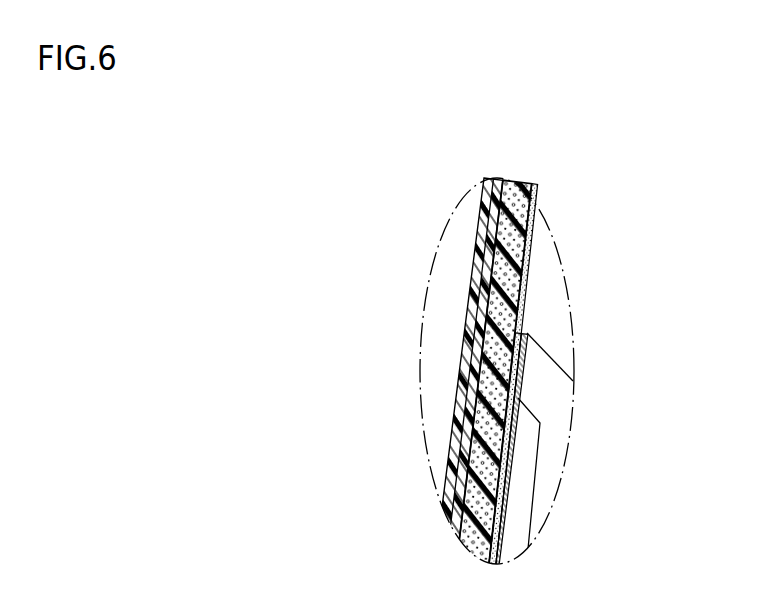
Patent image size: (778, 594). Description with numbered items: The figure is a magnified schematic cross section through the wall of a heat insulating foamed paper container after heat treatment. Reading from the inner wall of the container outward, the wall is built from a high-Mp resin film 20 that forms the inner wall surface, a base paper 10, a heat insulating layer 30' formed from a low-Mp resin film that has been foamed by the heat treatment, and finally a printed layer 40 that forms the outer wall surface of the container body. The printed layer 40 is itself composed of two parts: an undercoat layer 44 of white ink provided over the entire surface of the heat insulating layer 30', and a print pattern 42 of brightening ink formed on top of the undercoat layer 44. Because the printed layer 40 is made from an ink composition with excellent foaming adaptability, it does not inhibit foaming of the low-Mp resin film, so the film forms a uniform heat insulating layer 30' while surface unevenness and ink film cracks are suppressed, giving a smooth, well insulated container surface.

The base paper 10 is at (505, 180).
The high-Mp resin film 20 is at (497, 178).
The heat insulating layer 30' is at (537, 345).
The printed layer 40 is at (579, 432).
The print pattern 42 is at (524, 354).
The undercoat layer 44 is at (524, 313).